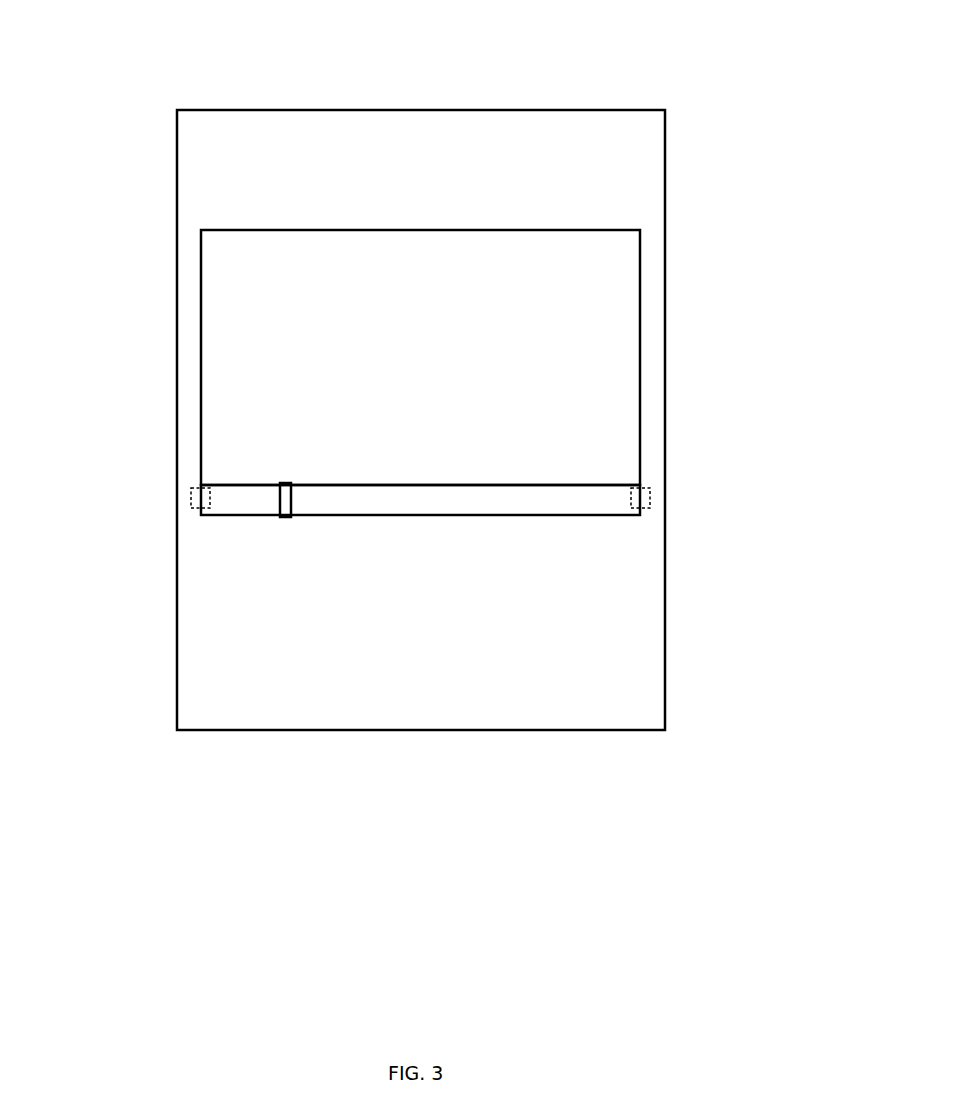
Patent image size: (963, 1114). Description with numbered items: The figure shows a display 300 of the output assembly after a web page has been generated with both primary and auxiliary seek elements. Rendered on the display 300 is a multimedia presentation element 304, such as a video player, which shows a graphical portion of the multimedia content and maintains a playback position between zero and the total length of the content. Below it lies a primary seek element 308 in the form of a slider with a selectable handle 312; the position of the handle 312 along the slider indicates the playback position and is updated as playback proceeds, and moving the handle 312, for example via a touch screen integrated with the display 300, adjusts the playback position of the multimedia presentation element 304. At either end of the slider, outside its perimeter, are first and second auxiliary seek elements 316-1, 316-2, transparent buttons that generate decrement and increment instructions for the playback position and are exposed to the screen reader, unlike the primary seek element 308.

The display 300 is at (251, 109).
The multimedia presentation element 304 is at (640, 323).
The primary seek element 308 is at (542, 515).
The handle 312 is at (287, 516).
The first auxiliary seek element 316-1 is at (191, 502).
The second auxiliary seek element 316-2 is at (650, 500).